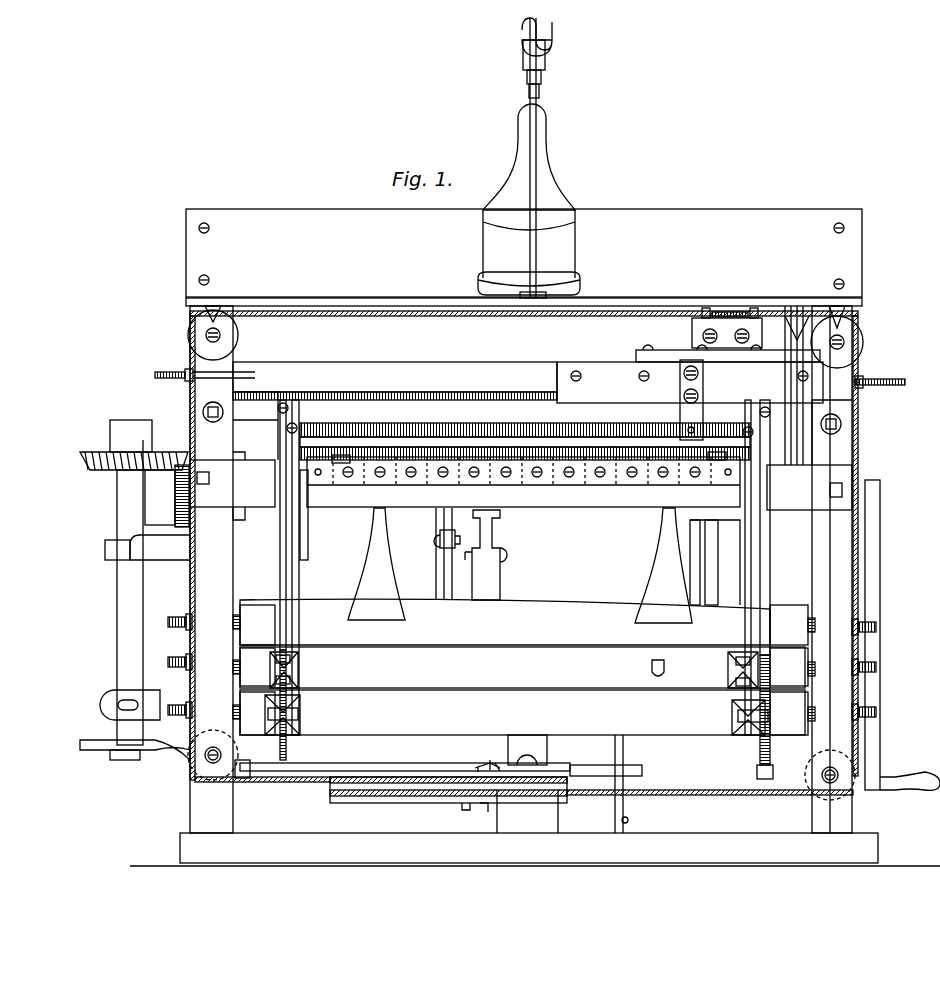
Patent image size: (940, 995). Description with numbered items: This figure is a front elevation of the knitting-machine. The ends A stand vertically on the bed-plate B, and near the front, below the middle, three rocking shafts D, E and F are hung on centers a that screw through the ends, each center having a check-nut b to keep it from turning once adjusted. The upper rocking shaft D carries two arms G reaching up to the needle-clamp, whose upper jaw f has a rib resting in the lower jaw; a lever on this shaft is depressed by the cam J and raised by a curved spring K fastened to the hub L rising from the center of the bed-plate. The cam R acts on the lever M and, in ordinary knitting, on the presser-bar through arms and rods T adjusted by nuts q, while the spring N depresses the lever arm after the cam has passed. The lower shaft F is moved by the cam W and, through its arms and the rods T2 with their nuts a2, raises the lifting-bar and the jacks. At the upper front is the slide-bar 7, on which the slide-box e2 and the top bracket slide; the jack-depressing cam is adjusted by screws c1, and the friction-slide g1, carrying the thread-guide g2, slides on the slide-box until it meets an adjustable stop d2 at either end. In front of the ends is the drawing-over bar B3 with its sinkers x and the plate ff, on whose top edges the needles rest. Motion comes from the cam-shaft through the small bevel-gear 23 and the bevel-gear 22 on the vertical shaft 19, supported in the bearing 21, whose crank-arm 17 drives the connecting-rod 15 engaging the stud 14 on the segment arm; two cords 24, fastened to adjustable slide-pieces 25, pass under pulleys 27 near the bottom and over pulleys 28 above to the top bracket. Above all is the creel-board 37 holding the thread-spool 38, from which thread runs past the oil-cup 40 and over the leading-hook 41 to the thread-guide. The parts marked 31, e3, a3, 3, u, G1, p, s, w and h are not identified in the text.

The top cover and creel-board 37 is at (524, 257).
The weight 31 is at (529, 158).
The thread-spool 38 is at (529, 276).
The leading-hook 41 is at (544, 37).
The oil-cup 40 is at (542, 69).
The ends A is at (521, 569).
The bed-plate B is at (535, 849).
The pulleys 28 is at (525, 337).
The pulleys 27 is at (521, 765).
The adjustable stop d2 is at (530, 374).
The slide-bar 7 is at (395, 377).
The toothed strip e3 is at (395, 402).
The friction-slide g1 is at (690, 374).
The bar end a3 is at (785, 358).
The thread-guide g2 is at (691, 400).
The nuts q is at (727, 333).
The screws c1 is at (727, 330).
The slide-box e2 is at (729, 308).
The rods 3 is at (795, 385).
The drawing-over bar B3 is at (521, 486).
The comb u is at (520, 434).
The plate ff is at (523, 482).
The sinkers x is at (529, 452).
The rods T2 is at (525, 589).
The rods T is at (521, 567).
The upper jaw f is at (299, 515).
The left funnel G1 is at (376, 564).
The arms G is at (663, 565).
The cam W is at (447, 554).
The cam J is at (486, 555).
The cam R is at (715, 562).
The rocking shaft D is at (505, 622).
The rocking shaft E is at (522, 667).
The rocking shaft F is at (522, 712).
The hook p is at (658, 663).
The centers a is at (524, 670).
The nut a2 is at (525, 715).
The nut s is at (514, 670).
The connecting-rod 15 is at (405, 762).
The stud 14 is at (606, 769).
The curved spring K is at (527, 750).
The spring N is at (483, 784).
The hub L is at (527, 811).
The cords 24 is at (524, 777).
The adjustable slide-piece 25 is at (481, 788).
The lever M is at (549, 801).
The bevel-gear 22 is at (134, 445).
The bevel-gear 23 is at (167, 496).
The bearing 21 is at (147, 547).
The vertical shaft 19 is at (130, 592).
The bearing w is at (130, 705).
The check-nut b is at (522, 662).
The crank-arm 17 is at (135, 748).
The crank h is at (902, 635).